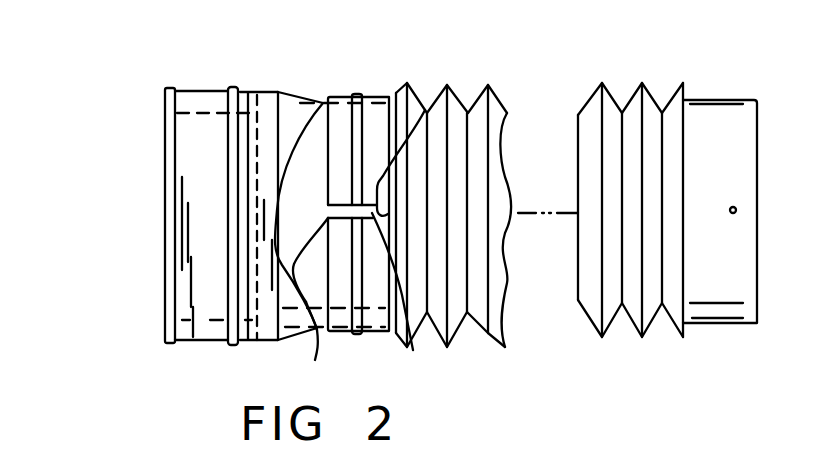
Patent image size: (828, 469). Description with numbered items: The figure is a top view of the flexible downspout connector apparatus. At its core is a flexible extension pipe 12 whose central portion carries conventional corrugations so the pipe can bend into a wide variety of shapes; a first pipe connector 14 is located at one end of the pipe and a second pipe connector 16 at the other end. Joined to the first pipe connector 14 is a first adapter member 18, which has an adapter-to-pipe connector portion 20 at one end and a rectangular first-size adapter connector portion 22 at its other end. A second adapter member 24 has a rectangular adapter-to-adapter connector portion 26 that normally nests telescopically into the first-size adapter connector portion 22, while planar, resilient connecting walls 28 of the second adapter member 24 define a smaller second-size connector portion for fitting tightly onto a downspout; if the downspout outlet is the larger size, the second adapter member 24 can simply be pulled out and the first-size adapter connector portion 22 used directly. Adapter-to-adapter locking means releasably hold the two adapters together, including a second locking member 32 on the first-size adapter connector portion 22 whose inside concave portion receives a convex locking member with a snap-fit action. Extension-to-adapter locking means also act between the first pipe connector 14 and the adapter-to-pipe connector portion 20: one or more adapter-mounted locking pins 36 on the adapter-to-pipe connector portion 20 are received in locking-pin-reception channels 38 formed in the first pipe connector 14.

The flexible extension pipe 12 is at (508, 345).
The first pipe connector 14 is at (373, 115).
The second pipe connector 16 is at (722, 133).
The first adapter member 18 is at (268, 80).
The adapter-to-pipe connector portion 20 is at (315, 358).
The first-size adapter connector portion 22 is at (205, 88).
The second adapter member 24 is at (157, 191).
The adapter-to-adapter connector portion 26 is at (205, 340).
The connecting walls 28 is at (180, 117).
The second locking member 32 is at (233, 345).
The adapter-mounted locking pin 36 is at (425, 110).
The locking-pin-reception channel 38 is at (413, 350).